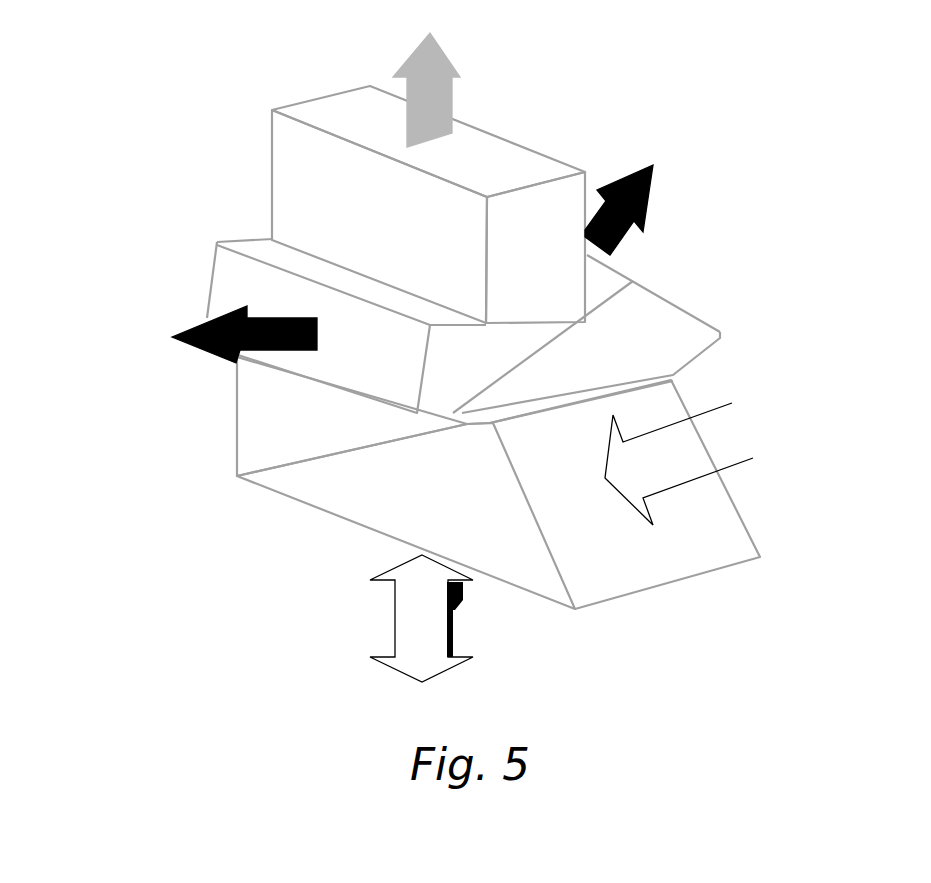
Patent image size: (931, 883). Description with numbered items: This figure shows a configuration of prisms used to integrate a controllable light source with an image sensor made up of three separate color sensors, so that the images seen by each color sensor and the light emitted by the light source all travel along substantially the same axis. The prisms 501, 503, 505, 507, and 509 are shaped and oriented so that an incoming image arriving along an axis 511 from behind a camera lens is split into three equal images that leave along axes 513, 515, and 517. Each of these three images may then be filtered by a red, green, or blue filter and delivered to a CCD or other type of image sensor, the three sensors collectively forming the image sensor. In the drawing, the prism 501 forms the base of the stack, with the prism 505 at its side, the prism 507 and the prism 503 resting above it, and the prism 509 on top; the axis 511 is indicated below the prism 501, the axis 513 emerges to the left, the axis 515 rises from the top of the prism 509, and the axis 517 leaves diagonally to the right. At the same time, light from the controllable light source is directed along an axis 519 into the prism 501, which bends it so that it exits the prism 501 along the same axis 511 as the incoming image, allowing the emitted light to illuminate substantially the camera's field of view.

The prism 501 is at (463, 500).
The prism 503 is at (650, 350).
The prism 505 is at (297, 422).
The prism 507 is at (390, 363).
The prism 509 is at (392, 230).
The axis 511 is at (403, 673).
The axis 513 is at (171, 340).
The axis 515 is at (429, 33).
The axis 517 is at (654, 165).
The axis 519 is at (744, 421).